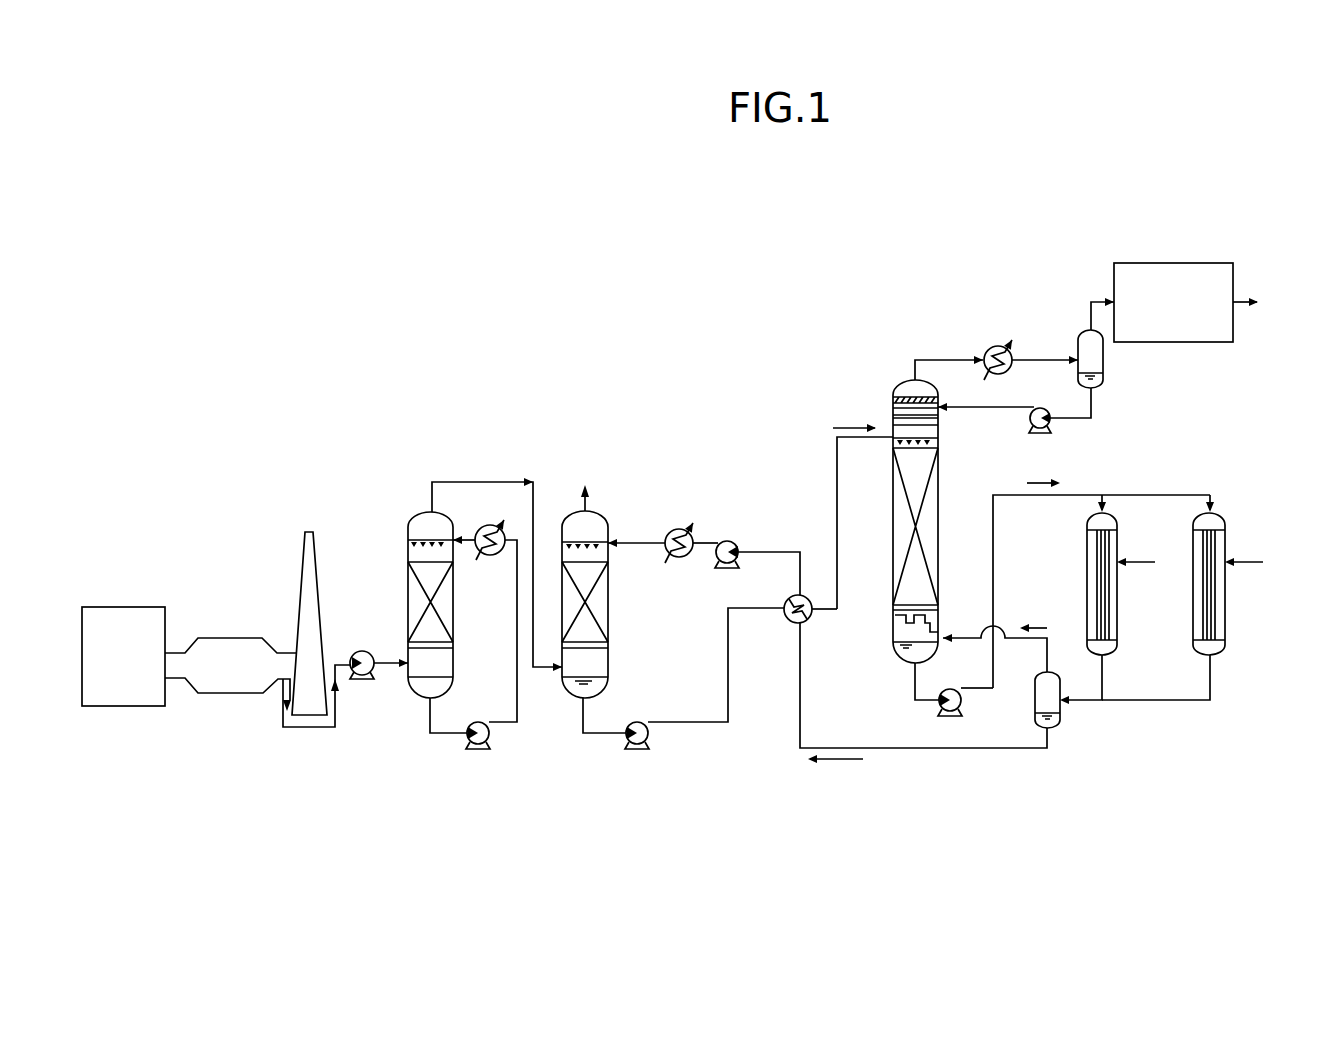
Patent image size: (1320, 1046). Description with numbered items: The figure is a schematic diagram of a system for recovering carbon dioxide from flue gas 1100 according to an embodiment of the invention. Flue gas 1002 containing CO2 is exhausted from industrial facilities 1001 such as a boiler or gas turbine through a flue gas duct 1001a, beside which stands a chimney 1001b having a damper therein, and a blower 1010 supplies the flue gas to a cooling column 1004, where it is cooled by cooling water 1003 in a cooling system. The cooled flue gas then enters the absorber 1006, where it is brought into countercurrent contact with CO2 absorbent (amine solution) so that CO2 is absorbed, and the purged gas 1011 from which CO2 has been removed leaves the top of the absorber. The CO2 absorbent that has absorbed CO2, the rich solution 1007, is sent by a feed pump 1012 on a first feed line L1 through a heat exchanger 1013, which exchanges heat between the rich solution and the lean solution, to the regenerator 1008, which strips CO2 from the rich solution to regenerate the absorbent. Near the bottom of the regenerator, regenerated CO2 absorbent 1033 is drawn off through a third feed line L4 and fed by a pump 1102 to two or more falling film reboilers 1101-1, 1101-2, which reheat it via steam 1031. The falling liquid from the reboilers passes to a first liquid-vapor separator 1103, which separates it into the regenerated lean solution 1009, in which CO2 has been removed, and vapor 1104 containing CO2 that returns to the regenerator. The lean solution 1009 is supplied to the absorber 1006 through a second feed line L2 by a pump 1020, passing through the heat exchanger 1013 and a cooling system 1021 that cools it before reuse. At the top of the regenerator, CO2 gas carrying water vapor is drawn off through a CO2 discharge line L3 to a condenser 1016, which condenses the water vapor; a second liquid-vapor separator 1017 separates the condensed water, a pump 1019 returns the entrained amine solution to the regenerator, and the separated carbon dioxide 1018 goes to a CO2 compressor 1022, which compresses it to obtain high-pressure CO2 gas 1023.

The industrial facilities 1001 is at (145, 607).
The flue gas duct 1001a is at (232, 695).
The chimney 1001b is at (300, 567).
The flue gas 1002 is at (340, 657).
The cooling water 1003 is at (476, 560).
The cooling column 1004 is at (408, 523).
The absorber 1006 is at (598, 512).
The rich solution 1007 is at (848, 427).
The regenerator 1008 is at (900, 390).
The lean solution 1009 is at (923, 718).
The blower 1010 is at (362, 677).
The purged gas 1011 is at (583, 510).
The feed pump 1012 is at (637, 750).
The heat exchanger 1013 is at (792, 625).
The condenser 1016 is at (992, 346).
The second liquid-vapor separator 1017 is at (1105, 357).
The carbon dioxide 1018 is at (1107, 300).
The pump 1019 is at (1028, 418).
The pump 1020 is at (735, 540).
The cooling system 1021 is at (677, 563).
The CO2 compressor 1022 is at (1155, 263).
The high-pressure CO2 gas 1023 is at (1273, 308).
The steam 1031 is at (1155, 562).
The regenerated CO2 absorbent 1033 is at (1058, 480).
The system for recovering carbon dioxide from flue gas 1100 is at (563, 315).
The falling film reboiler 1101-1 is at (1123, 535).
The falling film reboiler 1101-2 is at (1232, 535).
The pump 1102 is at (947, 716).
The first liquid-vapor separator 1103 is at (1060, 718).
The vapor 1104 is at (1047, 628).
The first feed line L1 is at (728, 726).
The second feed line L2 is at (838, 748).
The CO2 discharge line L3 is at (937, 360).
The third feed line L4 is at (995, 558).